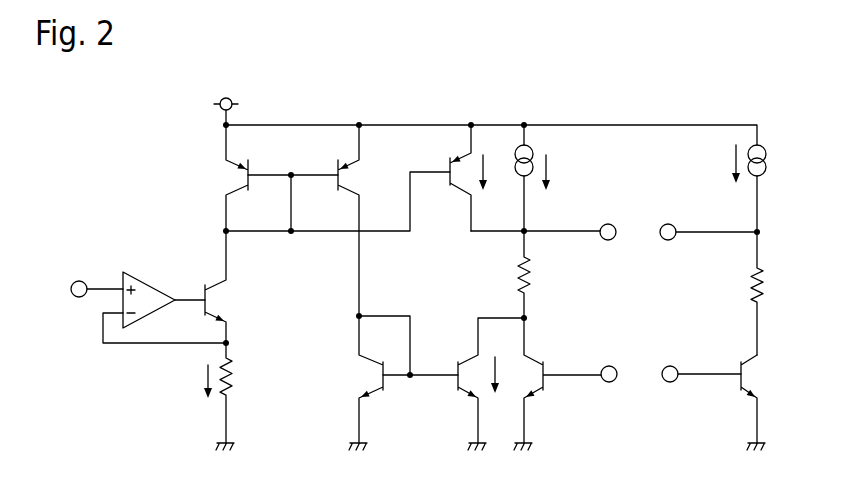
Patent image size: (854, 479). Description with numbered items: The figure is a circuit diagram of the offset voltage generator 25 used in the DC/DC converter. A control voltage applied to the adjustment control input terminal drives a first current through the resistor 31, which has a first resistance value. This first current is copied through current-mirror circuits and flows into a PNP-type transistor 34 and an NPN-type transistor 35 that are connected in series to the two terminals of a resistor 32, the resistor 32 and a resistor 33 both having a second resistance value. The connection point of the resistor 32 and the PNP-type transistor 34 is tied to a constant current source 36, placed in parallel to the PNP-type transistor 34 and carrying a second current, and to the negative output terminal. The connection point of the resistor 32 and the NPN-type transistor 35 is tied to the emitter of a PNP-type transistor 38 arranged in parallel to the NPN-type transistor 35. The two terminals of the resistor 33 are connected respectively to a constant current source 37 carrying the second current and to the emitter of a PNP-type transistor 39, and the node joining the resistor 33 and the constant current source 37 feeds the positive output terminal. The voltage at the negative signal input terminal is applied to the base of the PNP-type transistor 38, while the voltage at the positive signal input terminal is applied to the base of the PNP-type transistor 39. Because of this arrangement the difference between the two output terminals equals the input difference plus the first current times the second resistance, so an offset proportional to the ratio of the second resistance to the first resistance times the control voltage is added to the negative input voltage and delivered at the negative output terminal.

The offset voltage generator 25 is at (460, 53).
The resistor 31 is at (218, 409).
The resistor 32 is at (513, 273).
The resistor 33 is at (743, 285).
The PNP-type transistor 34 is at (448, 196).
The NPN-type transistor 35 is at (454, 401).
The constant current source 36 is at (540, 195).
The constant current source 37 is at (762, 143).
The PNP-type transistor 38 is at (544, 399).
The PNP-type transistor 39 is at (732, 394).